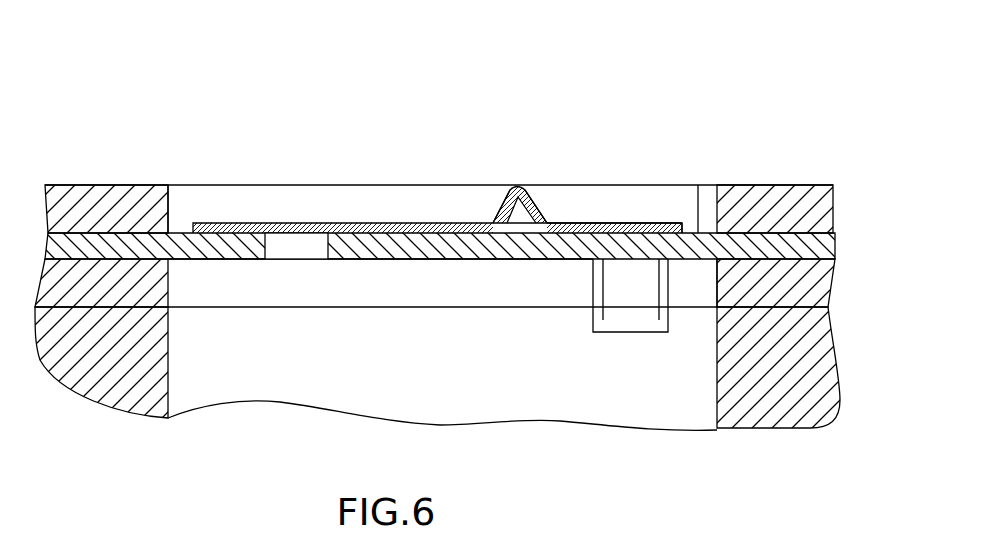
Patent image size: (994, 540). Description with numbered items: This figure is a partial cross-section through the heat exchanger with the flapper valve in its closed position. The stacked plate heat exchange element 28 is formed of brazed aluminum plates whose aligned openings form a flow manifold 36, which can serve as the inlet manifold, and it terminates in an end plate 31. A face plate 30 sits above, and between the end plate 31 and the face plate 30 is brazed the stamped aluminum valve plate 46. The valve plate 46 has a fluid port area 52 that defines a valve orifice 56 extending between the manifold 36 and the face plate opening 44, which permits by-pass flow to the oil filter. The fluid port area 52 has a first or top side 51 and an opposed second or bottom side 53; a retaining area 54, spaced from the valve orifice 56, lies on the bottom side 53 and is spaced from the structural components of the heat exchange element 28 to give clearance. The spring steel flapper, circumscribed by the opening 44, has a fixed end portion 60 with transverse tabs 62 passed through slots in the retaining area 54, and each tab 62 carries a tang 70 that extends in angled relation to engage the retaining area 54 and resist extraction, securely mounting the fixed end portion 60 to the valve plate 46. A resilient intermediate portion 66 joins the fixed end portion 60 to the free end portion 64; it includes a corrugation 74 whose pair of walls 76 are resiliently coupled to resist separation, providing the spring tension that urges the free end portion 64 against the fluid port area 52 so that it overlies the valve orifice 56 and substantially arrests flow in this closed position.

The heat exchange element 28 is at (797, 281).
The face plate 30 is at (800, 204).
The end plate 31 is at (815, 357).
The manifold 36 is at (373, 286).
The opening 44 is at (184, 205).
The valve plate 46 is at (816, 243).
The first or top side 51 is at (698, 185).
The fluid port area 52 is at (252, 252).
The second or bottom side 53 is at (688, 262).
The retaining area 54 is at (527, 259).
The valve orifice 56 is at (301, 252).
The fixed end portion 60 is at (651, 210).
The tab 62 is at (598, 288).
The free end portion 64 is at (300, 213).
The intermediate portion 66 is at (513, 133).
The tang 70 is at (625, 310).
The corrugation 74 is at (512, 172).
The wall 76 is at (483, 207).